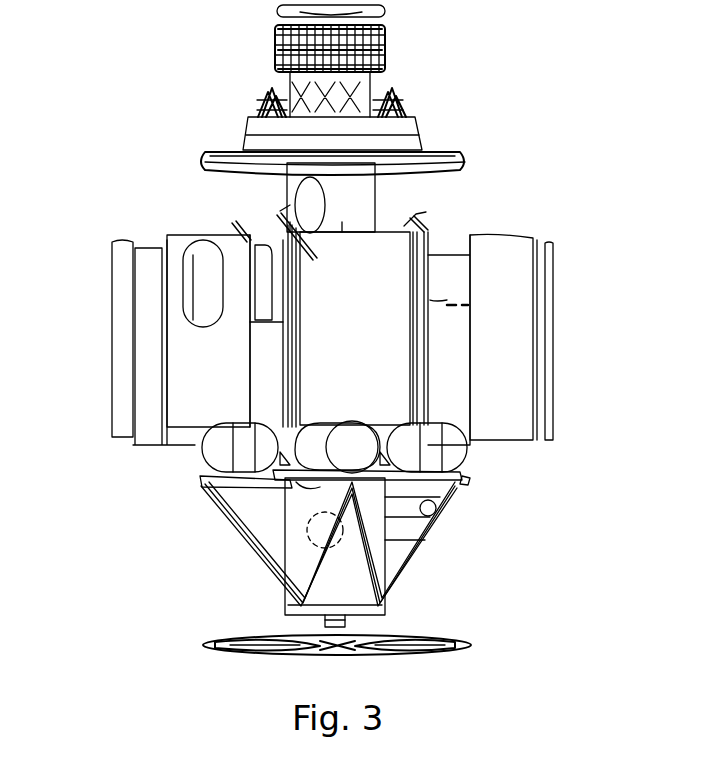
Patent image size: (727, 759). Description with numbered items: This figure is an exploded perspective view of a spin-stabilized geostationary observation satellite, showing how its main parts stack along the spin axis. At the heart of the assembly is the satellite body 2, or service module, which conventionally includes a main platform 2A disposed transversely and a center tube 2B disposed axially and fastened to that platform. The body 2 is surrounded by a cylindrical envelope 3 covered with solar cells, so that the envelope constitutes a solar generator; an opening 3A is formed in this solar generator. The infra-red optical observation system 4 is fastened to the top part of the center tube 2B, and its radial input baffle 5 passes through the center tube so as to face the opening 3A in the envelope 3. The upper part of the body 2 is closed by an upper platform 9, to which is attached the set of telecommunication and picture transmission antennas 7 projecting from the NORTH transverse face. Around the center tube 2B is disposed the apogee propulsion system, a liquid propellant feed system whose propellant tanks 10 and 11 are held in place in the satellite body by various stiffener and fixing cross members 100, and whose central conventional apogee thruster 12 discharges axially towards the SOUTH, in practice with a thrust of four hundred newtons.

The satellite body 2 is at (335, 597).
The main platform 2A is at (463, 485).
The center tube 2B is at (387, 537).
The cylindrical envelope 3 is at (560, 342).
The opening 3A is at (220, 295).
The infra-red optical observation system 4 is at (376, 203).
The radial input baffle 5 is at (250, 275).
The set of telecommunication and picture transmission antennas 7 is at (396, 60).
The upper platform 9 is at (465, 165).
The propellant tank 10 is at (202, 455).
The propellant tank 11 is at (455, 432).
The apogee thruster 12 is at (300, 627).
The stiffener and fixing cross members 100 is at (385, 597).